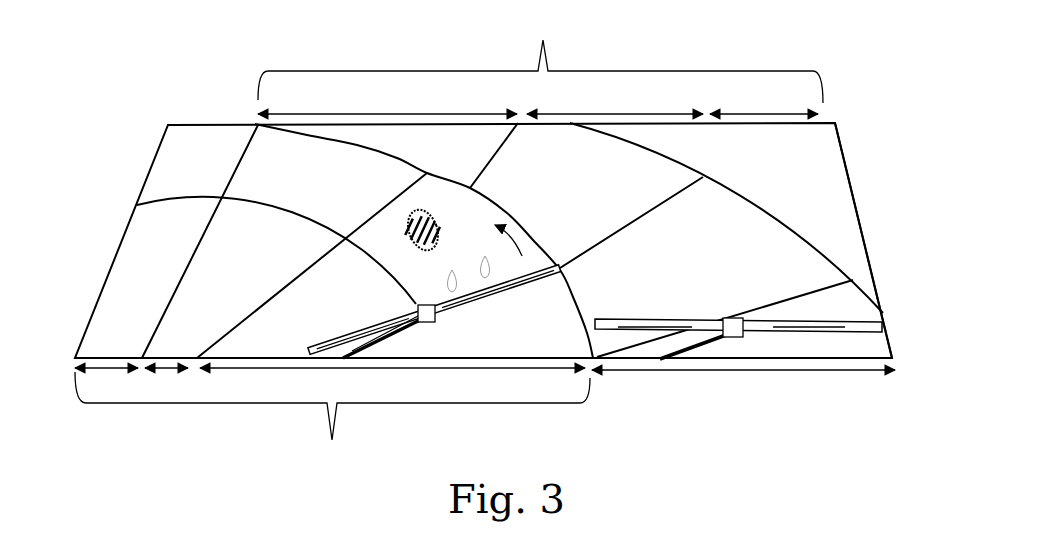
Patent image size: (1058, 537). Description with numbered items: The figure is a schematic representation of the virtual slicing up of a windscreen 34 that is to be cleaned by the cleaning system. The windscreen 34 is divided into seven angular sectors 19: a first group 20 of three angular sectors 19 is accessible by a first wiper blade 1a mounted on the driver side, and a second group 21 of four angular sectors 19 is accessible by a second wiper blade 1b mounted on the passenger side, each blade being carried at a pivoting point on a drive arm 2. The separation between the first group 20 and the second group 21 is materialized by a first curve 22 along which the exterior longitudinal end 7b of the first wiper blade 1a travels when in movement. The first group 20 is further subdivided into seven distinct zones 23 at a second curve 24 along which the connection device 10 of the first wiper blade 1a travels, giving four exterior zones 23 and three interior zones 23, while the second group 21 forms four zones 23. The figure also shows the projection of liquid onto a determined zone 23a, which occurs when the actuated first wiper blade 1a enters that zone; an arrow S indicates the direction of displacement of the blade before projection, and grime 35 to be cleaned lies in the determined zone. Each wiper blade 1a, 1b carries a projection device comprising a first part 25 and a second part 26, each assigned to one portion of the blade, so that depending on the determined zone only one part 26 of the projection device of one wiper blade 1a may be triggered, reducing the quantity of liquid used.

The first wiper blade 1a is at (325, 360).
The second wiper blade 1b is at (853, 310).
The drive arm 2 is at (380, 331).
The exterior longitudinal end 7b is at (562, 269).
The connection device 10 is at (428, 323).
The angular sector 19 is at (485, 242).
The first group 20 is at (332, 424).
The second group 21 is at (540, 53).
The first curve 22 is at (357, 148).
The zone 23 is at (483, 240).
The determined zone 23a is at (434, 229).
The second curve 24 is at (173, 200).
The first part 25 is at (390, 326).
The second part 26 is at (498, 294).
The windscreen 34 is at (839, 146).
The grime 35 is at (422, 207).
The arrow S is at (512, 240).